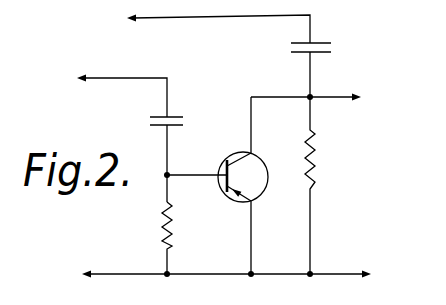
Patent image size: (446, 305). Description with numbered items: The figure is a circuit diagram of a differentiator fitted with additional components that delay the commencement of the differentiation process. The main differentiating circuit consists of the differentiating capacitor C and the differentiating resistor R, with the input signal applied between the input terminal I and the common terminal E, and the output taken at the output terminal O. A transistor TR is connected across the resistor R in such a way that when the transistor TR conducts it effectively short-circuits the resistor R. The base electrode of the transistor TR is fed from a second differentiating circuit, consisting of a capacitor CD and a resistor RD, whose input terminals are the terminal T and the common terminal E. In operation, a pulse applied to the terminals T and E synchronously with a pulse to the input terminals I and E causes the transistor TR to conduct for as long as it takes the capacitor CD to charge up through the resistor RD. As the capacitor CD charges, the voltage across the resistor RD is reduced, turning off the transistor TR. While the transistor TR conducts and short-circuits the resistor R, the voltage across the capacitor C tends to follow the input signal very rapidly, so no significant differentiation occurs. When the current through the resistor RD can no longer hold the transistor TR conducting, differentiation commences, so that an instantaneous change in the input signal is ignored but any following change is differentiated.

The input terminal I is at (209, 27).
The input terminal of second differentiating circuit T is at (113, 93).
The differentiating capacitor C is at (298, 69).
The capacitor CD is at (188, 158).
The transistor TR is at (249, 185).
The differentiating resistor R is at (319, 185).
The resistor RD is at (182, 238).
The output terminal O is at (312, 98).
The common terminal E is at (226, 263).